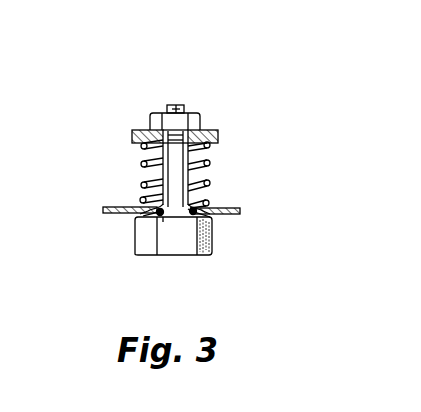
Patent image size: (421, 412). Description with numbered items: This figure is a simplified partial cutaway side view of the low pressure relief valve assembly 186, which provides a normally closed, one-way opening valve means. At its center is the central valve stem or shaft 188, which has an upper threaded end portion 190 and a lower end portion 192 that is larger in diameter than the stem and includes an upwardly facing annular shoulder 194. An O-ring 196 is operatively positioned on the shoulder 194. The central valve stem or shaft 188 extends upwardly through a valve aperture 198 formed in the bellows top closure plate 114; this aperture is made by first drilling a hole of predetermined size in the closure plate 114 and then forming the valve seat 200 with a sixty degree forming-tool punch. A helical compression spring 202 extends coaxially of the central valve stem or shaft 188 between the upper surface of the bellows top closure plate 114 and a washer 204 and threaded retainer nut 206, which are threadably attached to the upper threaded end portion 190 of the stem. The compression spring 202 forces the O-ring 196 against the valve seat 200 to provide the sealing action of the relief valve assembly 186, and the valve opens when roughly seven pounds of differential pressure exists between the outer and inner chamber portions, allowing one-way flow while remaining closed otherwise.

The bellows top closure plate 114 is at (103, 210).
The low pressure relief valve assembly 186 is at (232, 174).
The central valve stem or shaft 188 is at (166, 173).
The upper threaded end portion 190 is at (177, 107).
The lower end portion 192 is at (188, 250).
The annular shoulder 194 is at (140, 213).
The O-ring 196 is at (165, 220).
The valve aperture 198 is at (197, 201).
The valve seat 200 is at (200, 214).
The helical compression spring 202 is at (141, 163).
The washer 204 is at (219, 137).
The threaded retainer nut 206 is at (201, 123).